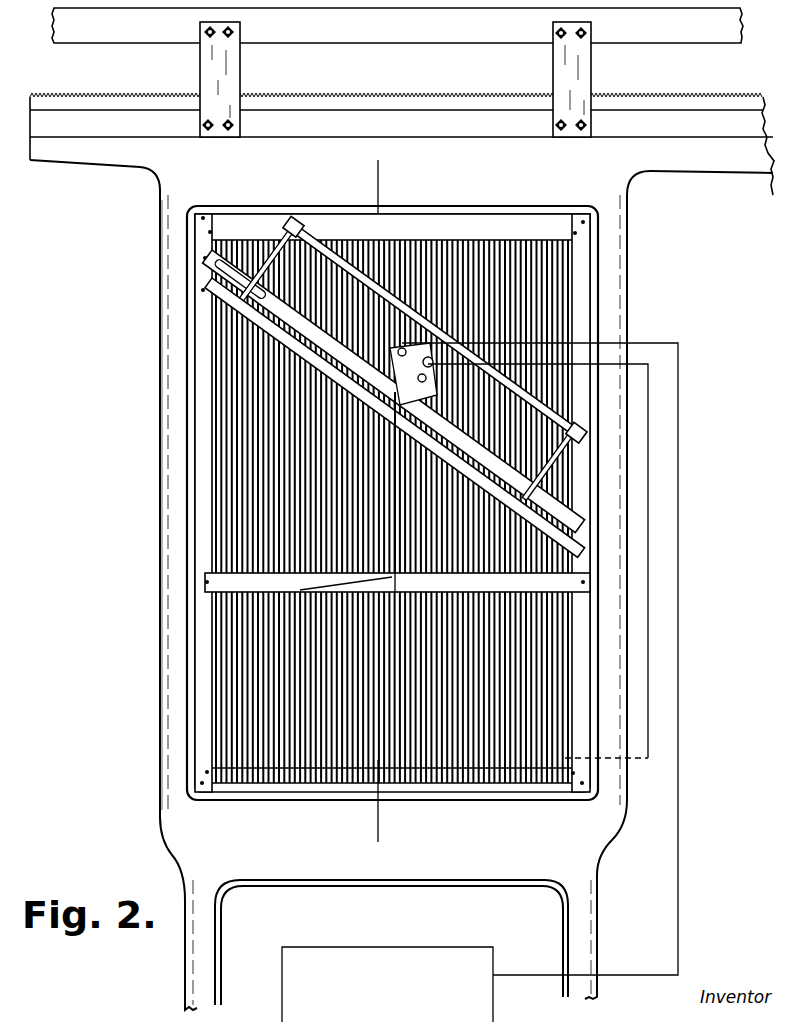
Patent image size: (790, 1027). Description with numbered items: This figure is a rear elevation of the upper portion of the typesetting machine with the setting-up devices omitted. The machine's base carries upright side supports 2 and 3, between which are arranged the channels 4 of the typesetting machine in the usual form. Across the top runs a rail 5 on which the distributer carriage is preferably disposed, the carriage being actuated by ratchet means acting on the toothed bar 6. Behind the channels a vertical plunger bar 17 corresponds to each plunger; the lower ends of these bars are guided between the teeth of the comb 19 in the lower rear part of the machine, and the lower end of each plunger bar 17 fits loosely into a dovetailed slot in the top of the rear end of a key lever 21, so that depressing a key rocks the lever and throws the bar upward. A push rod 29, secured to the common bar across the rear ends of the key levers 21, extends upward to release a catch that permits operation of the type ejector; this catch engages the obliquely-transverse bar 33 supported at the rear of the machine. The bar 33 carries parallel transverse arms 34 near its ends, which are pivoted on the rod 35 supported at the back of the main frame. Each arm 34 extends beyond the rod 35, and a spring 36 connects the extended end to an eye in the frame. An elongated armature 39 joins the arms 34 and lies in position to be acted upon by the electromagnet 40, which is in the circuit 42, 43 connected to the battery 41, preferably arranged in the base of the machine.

The upright side support 2 is at (627, 300).
The upright side support 3 is at (372, 164).
The channels 4 is at (531, 290).
The rail 5 is at (432, 40).
The toothed bar 6 is at (462, 96).
The vertical plunger bar 17 is at (250, 640).
The comb 19 is at (193, 800).
The key lever 21 is at (205, 776).
The push rod 29 is at (392, 580).
The obliquely-transverse bar 33 is at (232, 298).
The transverse arms 34 is at (280, 237).
The rod 35 is at (325, 232).
The spring 36 is at (302, 218).
The elongated armature 39 is at (285, 266).
The electromagnet 40 is at (408, 368).
The battery 41 is at (478, 1004).
The circuit 42 is at (680, 660).
The circuit 43 is at (652, 660).